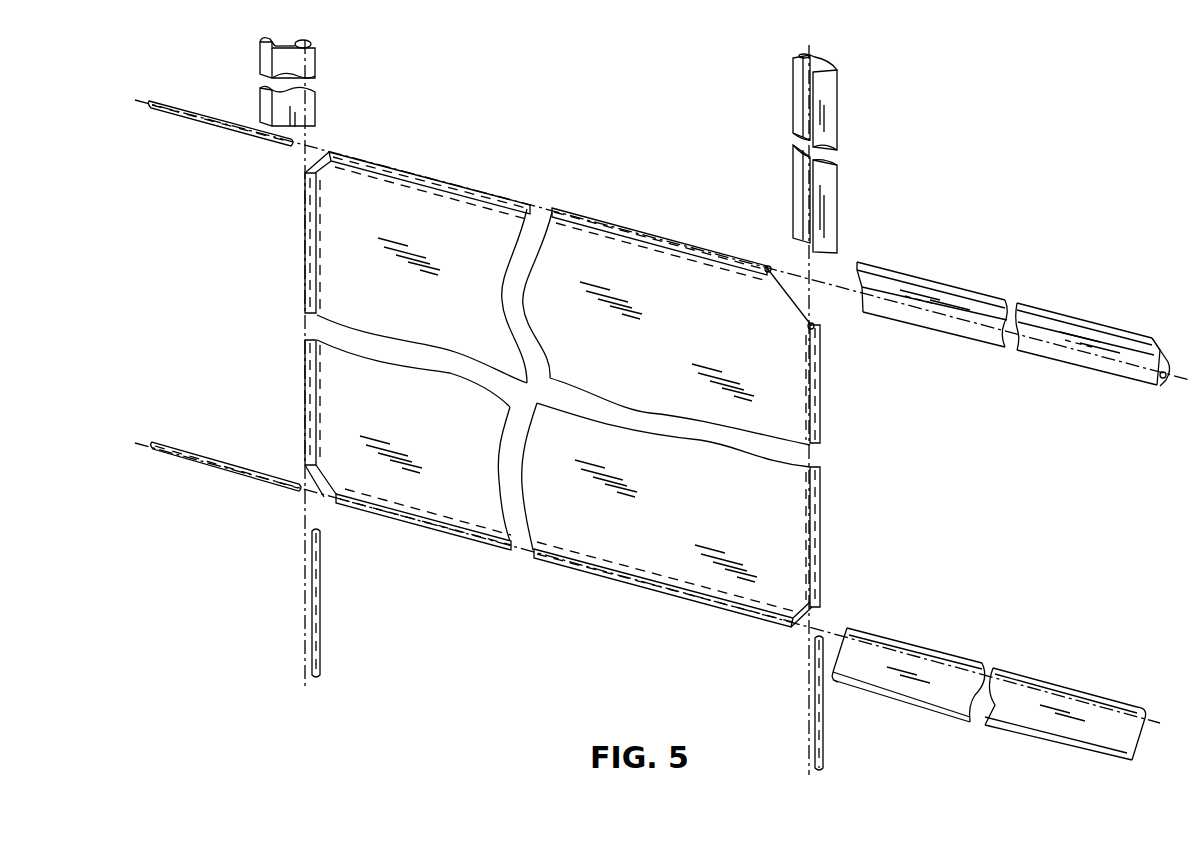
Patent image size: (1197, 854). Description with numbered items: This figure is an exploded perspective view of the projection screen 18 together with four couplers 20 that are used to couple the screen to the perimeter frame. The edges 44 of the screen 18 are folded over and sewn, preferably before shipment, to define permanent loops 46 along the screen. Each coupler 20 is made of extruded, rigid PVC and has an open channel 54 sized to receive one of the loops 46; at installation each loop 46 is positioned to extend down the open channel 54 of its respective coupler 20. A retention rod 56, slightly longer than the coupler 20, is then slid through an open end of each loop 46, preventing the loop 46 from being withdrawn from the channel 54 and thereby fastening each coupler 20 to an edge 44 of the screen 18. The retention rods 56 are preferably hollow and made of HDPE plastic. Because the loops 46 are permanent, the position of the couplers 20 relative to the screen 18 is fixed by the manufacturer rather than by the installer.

The projection screen 18 is at (636, 192).
The coupler 20 is at (346, 88).
The edge 44 is at (433, 183).
The loop 46 is at (777, 260).
The open channel 54 is at (1170, 391).
The retention rod 56 is at (183, 129).